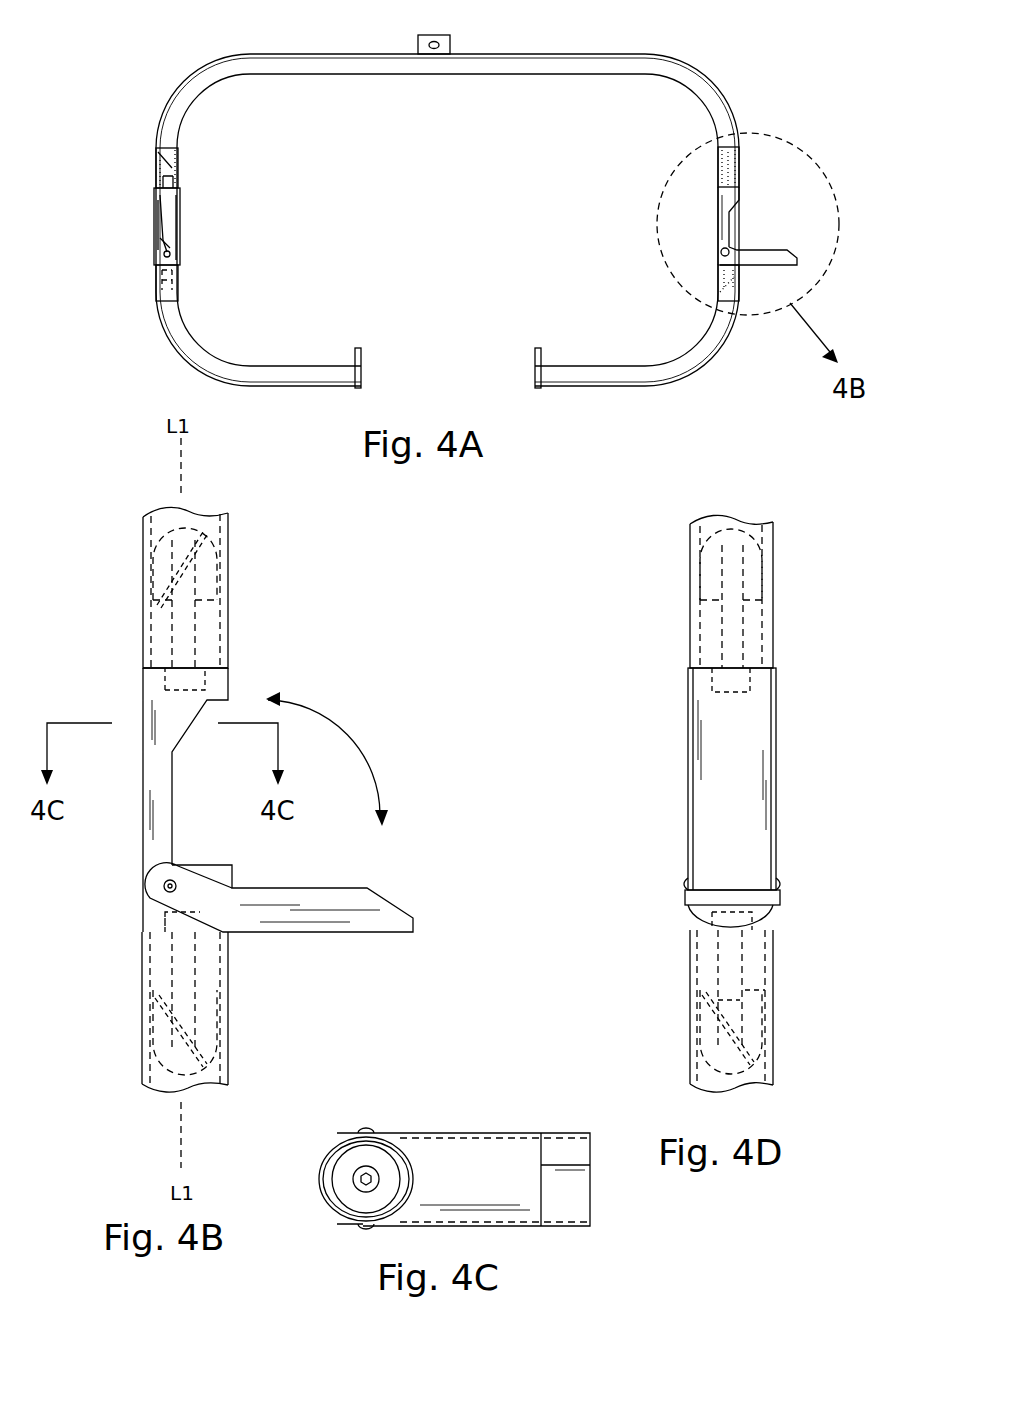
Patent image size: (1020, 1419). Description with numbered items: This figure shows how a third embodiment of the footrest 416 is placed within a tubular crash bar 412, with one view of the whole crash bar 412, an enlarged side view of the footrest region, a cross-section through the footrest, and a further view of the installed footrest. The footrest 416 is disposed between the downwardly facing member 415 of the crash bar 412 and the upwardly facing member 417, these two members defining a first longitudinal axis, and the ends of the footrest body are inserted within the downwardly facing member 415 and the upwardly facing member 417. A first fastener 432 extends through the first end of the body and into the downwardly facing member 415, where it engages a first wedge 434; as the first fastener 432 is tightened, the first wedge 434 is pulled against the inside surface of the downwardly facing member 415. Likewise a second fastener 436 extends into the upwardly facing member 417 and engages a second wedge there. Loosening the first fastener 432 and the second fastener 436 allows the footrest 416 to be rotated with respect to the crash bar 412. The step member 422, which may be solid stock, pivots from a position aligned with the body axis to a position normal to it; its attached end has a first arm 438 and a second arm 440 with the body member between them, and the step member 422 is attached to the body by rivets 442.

In FIG. 4A, the crash bar 412 is at (505, 55).
In FIG. 4A, the downwardly facing member 415 is at (158, 165).
In FIG. 4B, the downwardly facing member 415 is at (230, 593).
In FIG. 4D, the downwardly facing member 415 is at (775, 622).
In FIG. 4A, the footrest 416 is at (110, 230).
In FIG. 4B, the footrest 416 is at (100, 690).
In FIG. 4D, the footrest 416 is at (818, 823).
In FIG. 4A, the upwardly facing member 417 is at (158, 297).
In FIG. 4B, the upwardly facing member 417 is at (142, 1020).
In FIG. 4D, the upwardly facing member 417 is at (775, 993).
In FIG. 4B, the first fastener 432 is at (230, 680).
In FIG. 4B, the first wedge 434 is at (157, 547).
In FIG. 4B, the second fastener 436 is at (193, 977).
In FIG. 4B, the second arm 440 is at (186, 880).
In FIG. 4C, the second arm 440 is at (355, 1228).
In FIG. 4B, the rivets 442 is at (164, 890).
In FIG. 4C, the rivets 442 is at (366, 1130).
In FIG. 4C, the first arm 438 is at (350, 1130).
In FIG. 4C, the step member 422 is at (480, 1133).